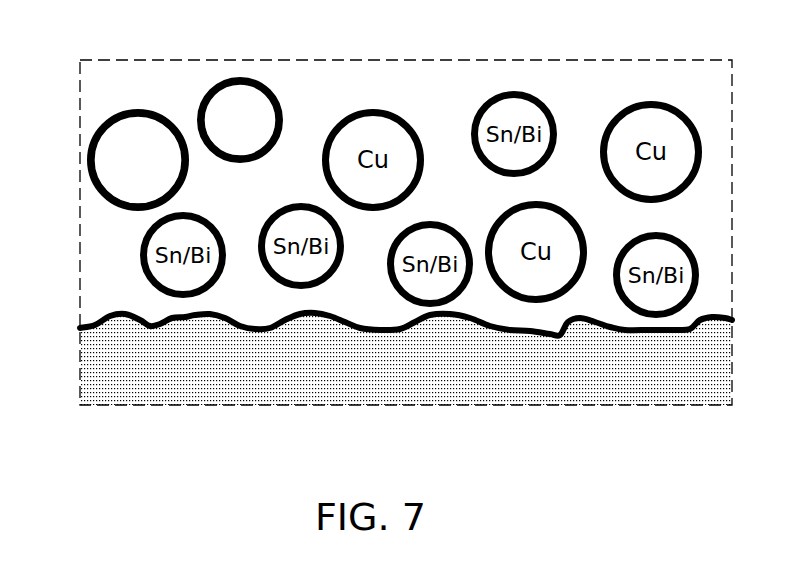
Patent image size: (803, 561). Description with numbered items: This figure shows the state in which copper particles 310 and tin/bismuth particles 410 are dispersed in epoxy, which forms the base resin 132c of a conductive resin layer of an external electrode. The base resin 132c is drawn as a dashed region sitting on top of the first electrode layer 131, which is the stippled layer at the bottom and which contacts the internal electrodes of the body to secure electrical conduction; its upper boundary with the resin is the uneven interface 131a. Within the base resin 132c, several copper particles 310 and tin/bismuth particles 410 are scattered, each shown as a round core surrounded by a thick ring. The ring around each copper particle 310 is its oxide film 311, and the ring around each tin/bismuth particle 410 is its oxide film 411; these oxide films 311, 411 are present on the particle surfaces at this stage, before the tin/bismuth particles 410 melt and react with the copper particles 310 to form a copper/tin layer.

The first electrode layer 131 is at (157, 380).
The rough surface of substrate 131a is at (108, 316).
The base resin 132c is at (592, 92).
The copper (Cu) particles 310 is at (118, 139).
The oxide film 311 is at (98, 194).
The tin/bismuth (Sn/Bi) particles 410 is at (240, 100).
The oxide film 411 is at (210, 90).